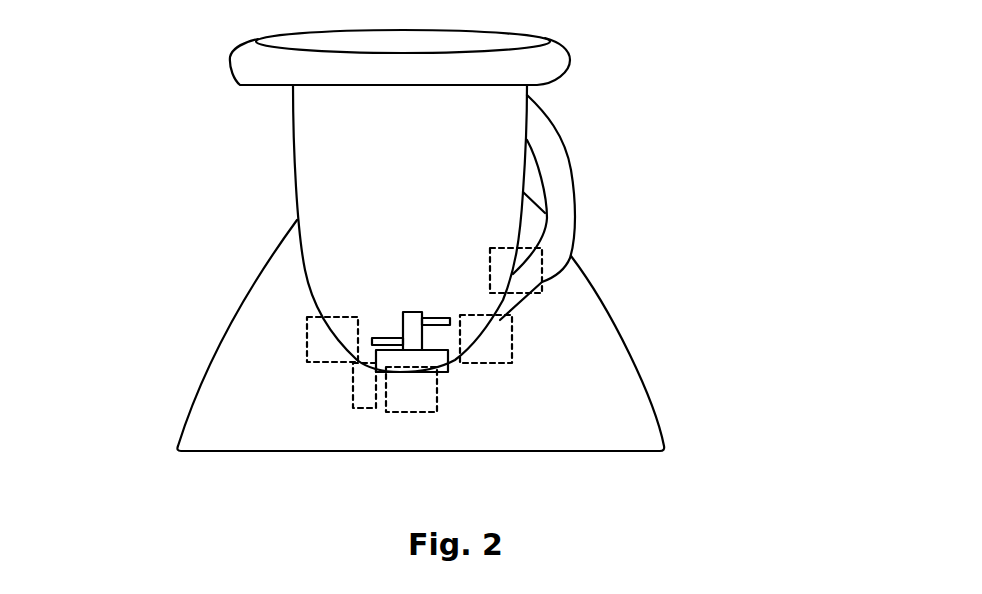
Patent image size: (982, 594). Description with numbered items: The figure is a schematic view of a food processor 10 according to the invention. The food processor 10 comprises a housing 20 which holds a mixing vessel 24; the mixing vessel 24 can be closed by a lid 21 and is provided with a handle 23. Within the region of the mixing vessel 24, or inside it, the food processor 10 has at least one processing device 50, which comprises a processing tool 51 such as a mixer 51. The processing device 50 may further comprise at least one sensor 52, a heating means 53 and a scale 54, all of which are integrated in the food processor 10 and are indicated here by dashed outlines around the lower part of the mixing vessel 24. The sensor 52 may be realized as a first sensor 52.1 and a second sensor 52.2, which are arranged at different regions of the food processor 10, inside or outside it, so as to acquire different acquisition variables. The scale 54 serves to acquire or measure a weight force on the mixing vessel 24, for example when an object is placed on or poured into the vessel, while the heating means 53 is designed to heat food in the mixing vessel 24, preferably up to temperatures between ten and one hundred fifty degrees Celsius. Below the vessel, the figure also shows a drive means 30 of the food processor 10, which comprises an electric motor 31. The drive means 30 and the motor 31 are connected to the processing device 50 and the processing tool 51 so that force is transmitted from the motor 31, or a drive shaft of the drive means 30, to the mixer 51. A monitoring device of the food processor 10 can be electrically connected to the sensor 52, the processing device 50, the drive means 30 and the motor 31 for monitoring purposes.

The food processor 10 is at (160, 135).
The housing 20 is at (202, 367).
The lid 21 is at (522, 37).
The handle 23 is at (567, 197).
The mixing vessel 24 is at (500, 134).
The drive means 30 is at (437, 394).
The motor 31 is at (411, 389).
The processing device 50 is at (378, 315).
The processing tool 51 is at (411, 331).
The sensor 52 is at (463, 329).
The first sensor 52.1 is at (305, 345).
The second sensor 52.2 is at (542, 281).
The heating means 53 is at (512, 337).
The scale 54 is at (353, 403).